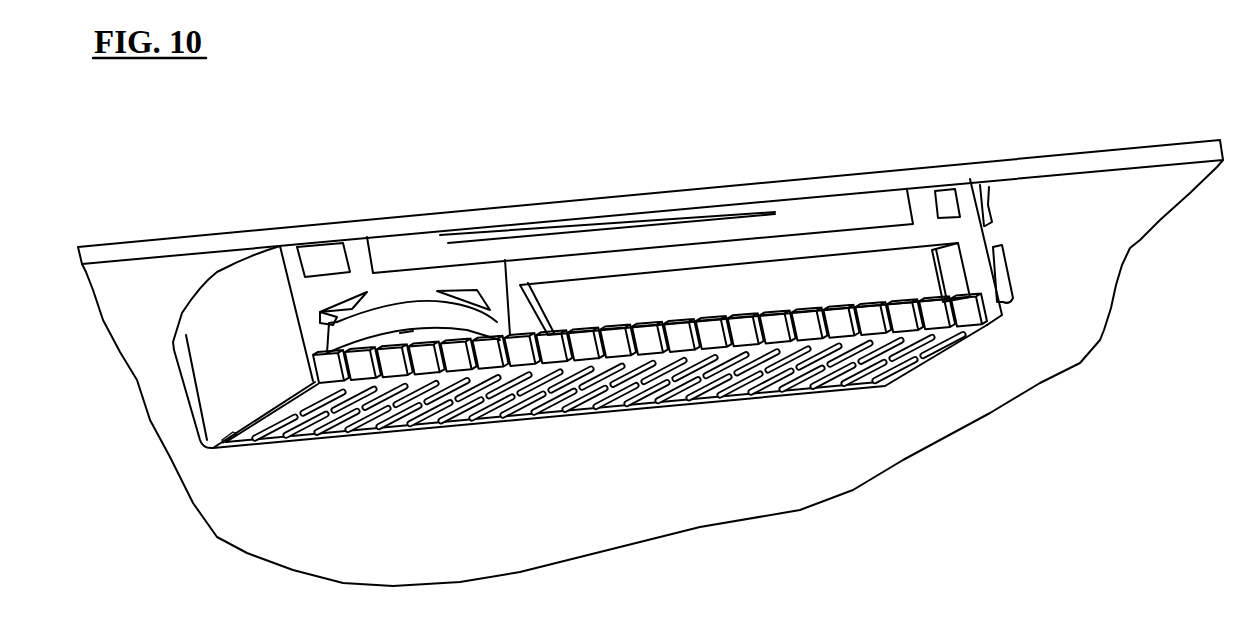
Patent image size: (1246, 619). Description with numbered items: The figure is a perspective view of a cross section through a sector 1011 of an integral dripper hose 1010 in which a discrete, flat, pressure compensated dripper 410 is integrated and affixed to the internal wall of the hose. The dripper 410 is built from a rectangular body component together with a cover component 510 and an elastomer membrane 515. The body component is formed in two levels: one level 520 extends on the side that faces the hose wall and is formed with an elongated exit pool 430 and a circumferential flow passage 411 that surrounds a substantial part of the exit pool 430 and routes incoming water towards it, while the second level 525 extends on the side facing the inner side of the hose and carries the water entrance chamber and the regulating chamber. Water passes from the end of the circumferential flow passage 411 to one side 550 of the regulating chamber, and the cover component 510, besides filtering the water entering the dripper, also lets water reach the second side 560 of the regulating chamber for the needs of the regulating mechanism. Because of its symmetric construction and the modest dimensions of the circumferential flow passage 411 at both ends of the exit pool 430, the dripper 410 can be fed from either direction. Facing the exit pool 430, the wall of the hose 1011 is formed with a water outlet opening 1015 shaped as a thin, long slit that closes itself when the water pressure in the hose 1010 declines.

The discrete flat dripper 410 is at (650, 383).
The circumferential flow passage 411 is at (325, 252).
The elongated exit pool 430 is at (808, 217).
The cover component 510 is at (760, 388).
The elastomer membrane 515 is at (487, 316).
The first level of body component 520 is at (993, 221).
The second level of body component 525 is at (1007, 270).
The one side of regulating chamber 550 is at (335, 311).
The second side of regulating chamber 560 is at (408, 333).
The integral dripper hose 1010 is at (645, 324).
The sector of hose 1011 is at (1050, 350).
The water outlet opening 1015 is at (657, 228).